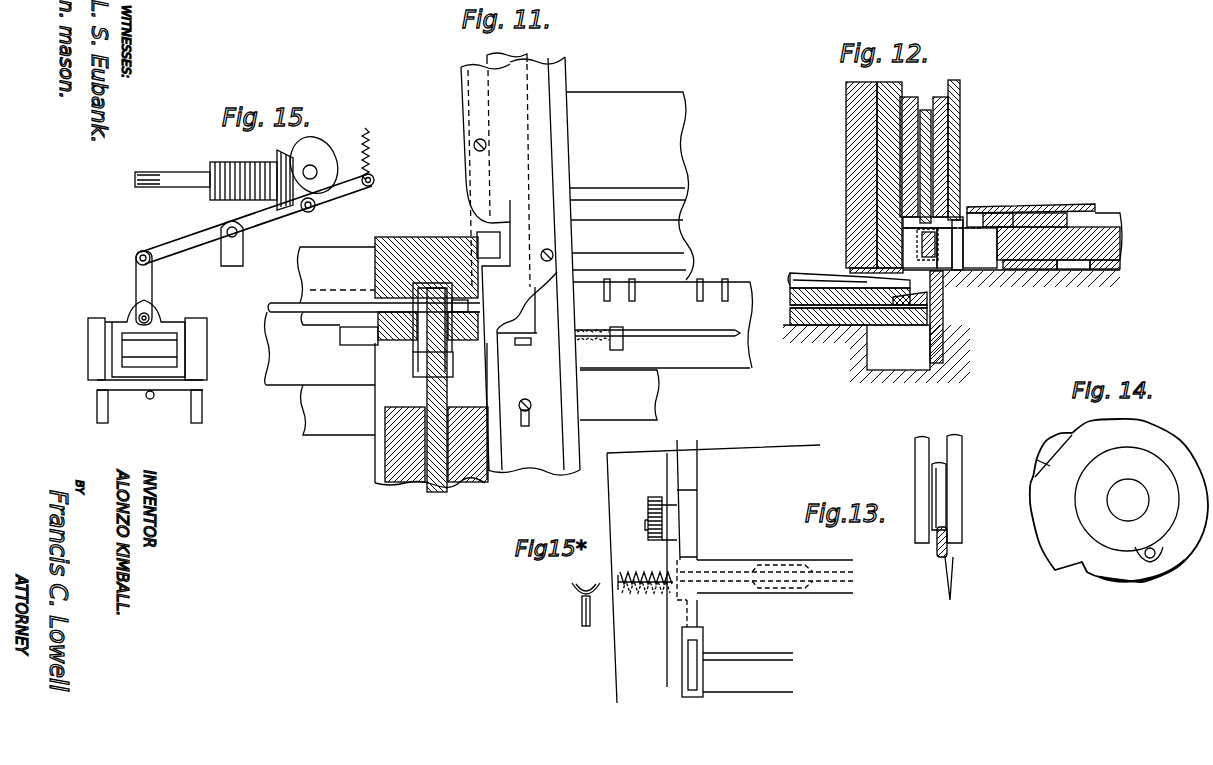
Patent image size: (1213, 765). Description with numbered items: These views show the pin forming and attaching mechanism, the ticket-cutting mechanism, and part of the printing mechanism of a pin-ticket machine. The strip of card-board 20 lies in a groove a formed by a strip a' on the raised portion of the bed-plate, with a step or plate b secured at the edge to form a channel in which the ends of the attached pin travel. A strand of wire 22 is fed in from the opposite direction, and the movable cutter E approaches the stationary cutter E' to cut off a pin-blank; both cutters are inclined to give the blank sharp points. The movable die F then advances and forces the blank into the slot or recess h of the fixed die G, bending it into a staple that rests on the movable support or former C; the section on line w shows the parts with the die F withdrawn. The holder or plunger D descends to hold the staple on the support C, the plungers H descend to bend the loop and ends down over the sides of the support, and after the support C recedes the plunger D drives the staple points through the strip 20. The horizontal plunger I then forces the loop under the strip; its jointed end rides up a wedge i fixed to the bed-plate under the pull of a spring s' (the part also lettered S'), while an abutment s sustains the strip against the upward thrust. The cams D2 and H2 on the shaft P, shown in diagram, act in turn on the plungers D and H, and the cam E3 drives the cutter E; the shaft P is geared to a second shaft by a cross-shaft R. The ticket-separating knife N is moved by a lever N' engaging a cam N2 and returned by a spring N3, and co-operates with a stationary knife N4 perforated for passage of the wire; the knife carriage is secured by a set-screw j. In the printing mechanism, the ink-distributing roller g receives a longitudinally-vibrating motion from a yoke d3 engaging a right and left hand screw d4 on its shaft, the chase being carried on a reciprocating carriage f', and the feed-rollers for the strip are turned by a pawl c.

In FIG. 11, the movable cutter E is at (607, 255).
In FIG. 11, the stationary cutter E' is at (520, 359).
In FIG. 11, the movable die F is at (437, 492).
In FIG. 12, the movable die F is at (1092, 213).
In FIG. 11, the section line w is at (427, 236).
In FIG. 11, the pawl c is at (292, 312).
In FIG. 11, the abutment s is at (359, 336).
In FIG. 11, the groove a is at (361, 357).
In FIG. 12, the groove a is at (1059, 285).
In FIG. 11, the strip a' is at (480, 402).
In FIG. 12, the strip a' is at (1041, 267).
In FIG. 11, the slot or recess h is at (417, 352).
In FIG. 12, the slot or recess h is at (956, 253).
In FIG. 11, the vertically-reciprocating bed or carriage f' is at (396, 388).
In FIG. 11, the strip of card-board 20 is at (744, 355).
In FIG. 12, the strip of card-board 20 is at (983, 272).
In FIG. 11, the strand of wire 22 is at (410, 287).
In FIG. 12, the strand of wire 22 is at (965, 226).
In FIG. 12, the vertically-reciprocating plungers H is at (905, 97).
In FIG. 13, the vertically-reciprocating plungers H is at (915, 468).
In FIG. 12, the holder or plunger D is at (925, 110).
In FIG. 13, the holder or plunger D is at (938, 495).
In FIG. 12, the fixed die G is at (962, 142).
In FIG. 12, the movable support or former C is at (945, 218).
In FIG. 13, the movable support or former C is at (937, 552).
In FIG. 12, the horizontally-reciprocating plunger I is at (792, 280).
In FIG. 12, the slide S' is at (858, 284).
In FIG. 12, the spring s' is at (835, 263).
In FIG. 12, the wedge i is at (905, 304).
In FIG. 15, the step or plate b is at (130, 378).
In FIG. 12, the step or plate b is at (930, 351).
In FIG. 14, the cam H2 is at (1060, 440).
In FIG. 14, the cam D2 is at (1080, 585).
In FIG. 14, the cam E3 is at (1151, 558).
In FIG. 15, the cross-shaft R is at (214, 177).
In FIG. 15, the cam N2 is at (318, 145).
In FIG. 15, the spring N3 is at (374, 146).
In FIG. 15, the lever N' is at (189, 266).
In FIG. 15, the shaft P is at (342, 195).
In FIG. 15, the stationary knife N4 is at (160, 333).
In FIG. 15, the vertically-reciprocating knife N is at (162, 361).
In FIG. 15, the set-screw j is at (155, 396).
The yoke d3 is at (632, 570).
The right and left hand screw d4 is at (648, 597).
The ink-distributing roller g is at (766, 576).